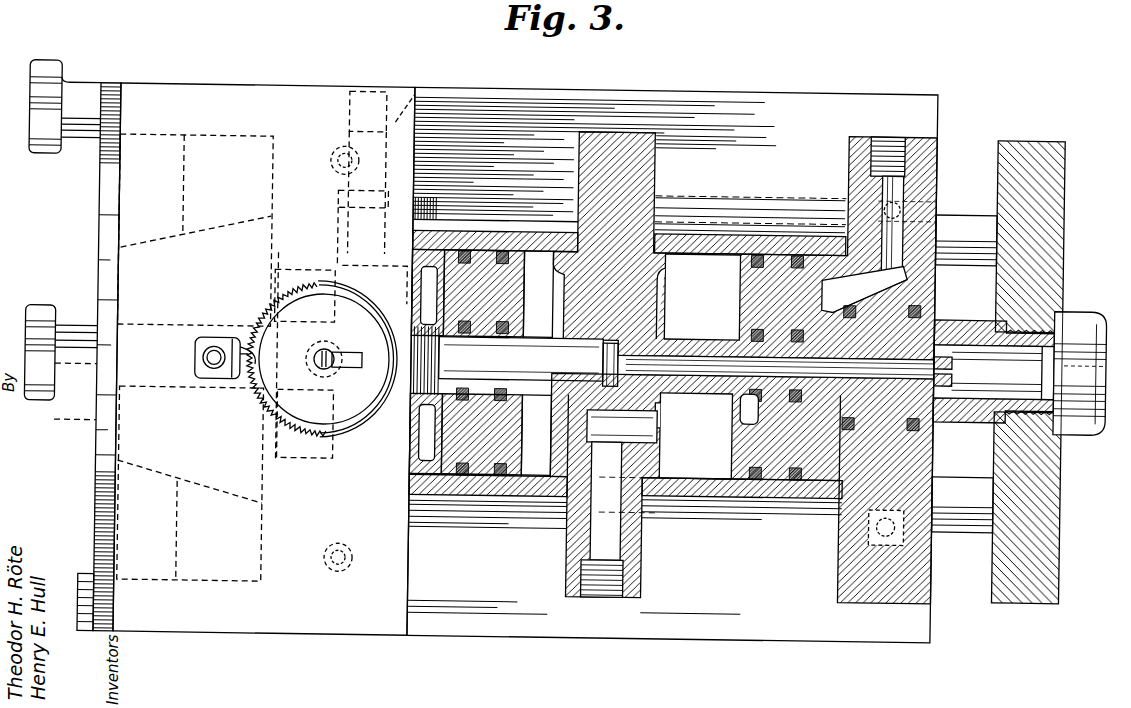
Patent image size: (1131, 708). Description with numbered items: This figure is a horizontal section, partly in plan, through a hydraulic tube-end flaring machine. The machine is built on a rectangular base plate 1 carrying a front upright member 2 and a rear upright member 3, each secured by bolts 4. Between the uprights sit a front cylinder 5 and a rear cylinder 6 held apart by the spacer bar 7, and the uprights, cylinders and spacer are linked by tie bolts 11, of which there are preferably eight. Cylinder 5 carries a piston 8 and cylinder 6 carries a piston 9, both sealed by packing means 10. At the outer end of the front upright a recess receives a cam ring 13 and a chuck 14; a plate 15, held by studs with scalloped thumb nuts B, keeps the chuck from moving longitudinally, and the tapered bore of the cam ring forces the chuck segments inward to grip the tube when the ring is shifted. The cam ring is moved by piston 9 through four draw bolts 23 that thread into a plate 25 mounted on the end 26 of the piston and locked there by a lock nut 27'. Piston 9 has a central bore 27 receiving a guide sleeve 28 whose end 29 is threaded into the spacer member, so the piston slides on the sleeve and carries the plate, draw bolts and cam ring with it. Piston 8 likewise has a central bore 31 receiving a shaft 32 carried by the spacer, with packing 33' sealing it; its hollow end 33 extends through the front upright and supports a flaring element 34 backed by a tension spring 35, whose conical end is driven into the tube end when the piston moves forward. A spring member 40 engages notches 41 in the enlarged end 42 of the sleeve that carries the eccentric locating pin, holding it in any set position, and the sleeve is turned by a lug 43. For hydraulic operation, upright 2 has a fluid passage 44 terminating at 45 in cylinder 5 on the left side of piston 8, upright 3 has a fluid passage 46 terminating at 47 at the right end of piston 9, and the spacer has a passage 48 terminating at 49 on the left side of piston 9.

The base plate 1 is at (553, 633).
The front upright member 2 is at (371, 631).
The upright member 3 is at (920, 550).
The bolts 4 is at (336, 149).
The cylinder 5 is at (498, 226).
The cylinder 6 is at (786, 226).
The spacer bar 7 is at (648, 167).
The piston 8 is at (508, 414).
The piston 9 is at (743, 434).
The packing means 10 is at (518, 278).
The tie bolts 11 is at (728, 200).
The cam ring 13 is at (192, 187).
The chuck 14 is at (156, 243).
The plate 15 is at (98, 459).
The draw bolts 23 is at (953, 218).
The plate 25 is at (1057, 234).
The end of piston 26 is at (978, 320).
The central bore 27 is at (836, 381).
The lock nut 27' is at (1080, 364).
The guide sleeve 28 is at (934, 410).
The end of guide sleeve 29 is at (668, 315).
The central bore 31 is at (520, 392).
The shaft 32 is at (538, 345).
The end of piston 33 is at (435, 254).
The packing 33' is at (479, 434).
The flaring element 34 is at (245, 484).
The tension spring 35 is at (445, 352).
The spring member 40 is at (232, 379).
The notches 41 is at (261, 388).
The enlarged end of sleeve 42 is at (348, 418).
The lug 43 is at (345, 350).
The fluid passage 44 is at (396, 118).
The termination of fluid passage 45 is at (418, 283).
The fluid passage 46 is at (902, 176).
The termination of fluid passage 47 is at (918, 276).
The passage 48 is at (612, 541).
The termination of passage 49 is at (662, 420).
The scalloped thumb nuts B is at (46, 152).